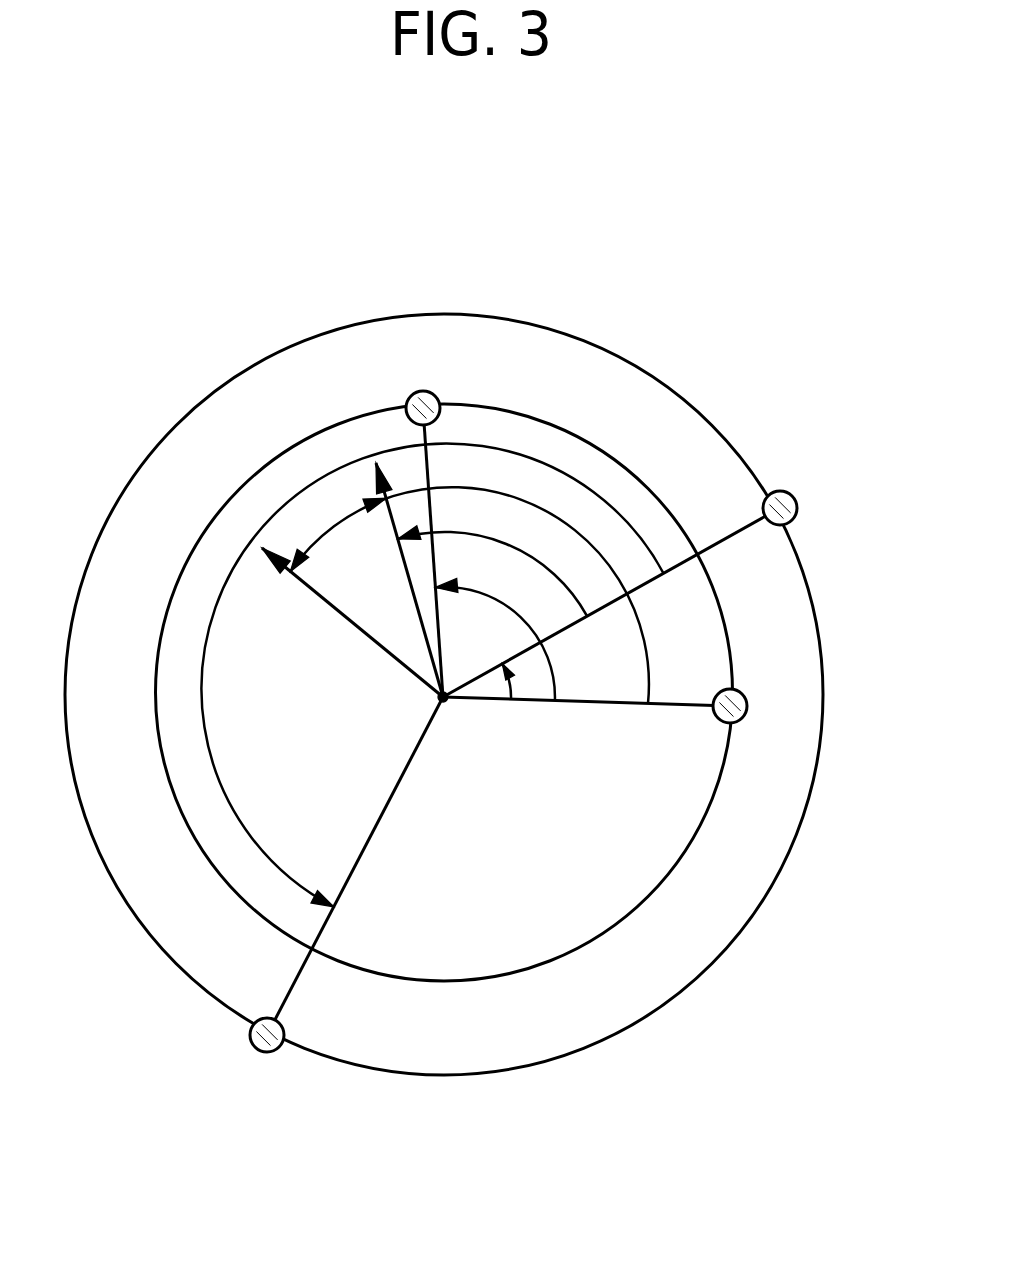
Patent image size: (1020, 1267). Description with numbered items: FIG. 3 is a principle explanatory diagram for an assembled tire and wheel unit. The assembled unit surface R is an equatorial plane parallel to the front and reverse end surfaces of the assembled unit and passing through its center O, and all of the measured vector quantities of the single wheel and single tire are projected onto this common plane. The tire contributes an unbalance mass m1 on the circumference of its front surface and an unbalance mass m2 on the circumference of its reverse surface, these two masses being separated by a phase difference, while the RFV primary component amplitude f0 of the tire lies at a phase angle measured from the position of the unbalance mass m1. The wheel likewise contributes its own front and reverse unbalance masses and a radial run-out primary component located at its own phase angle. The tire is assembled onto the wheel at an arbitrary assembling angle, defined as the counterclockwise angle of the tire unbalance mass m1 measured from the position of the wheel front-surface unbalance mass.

The assembled unit surface R is at (653, 368).
The unbalance mass of tire front surface m1 is at (787, 490).
The unbalance mass of tire reverse surface m2 is at (250, 1040).
The center O is at (452, 708).
The RFV primary component amplitude f0 is at (413, 601).